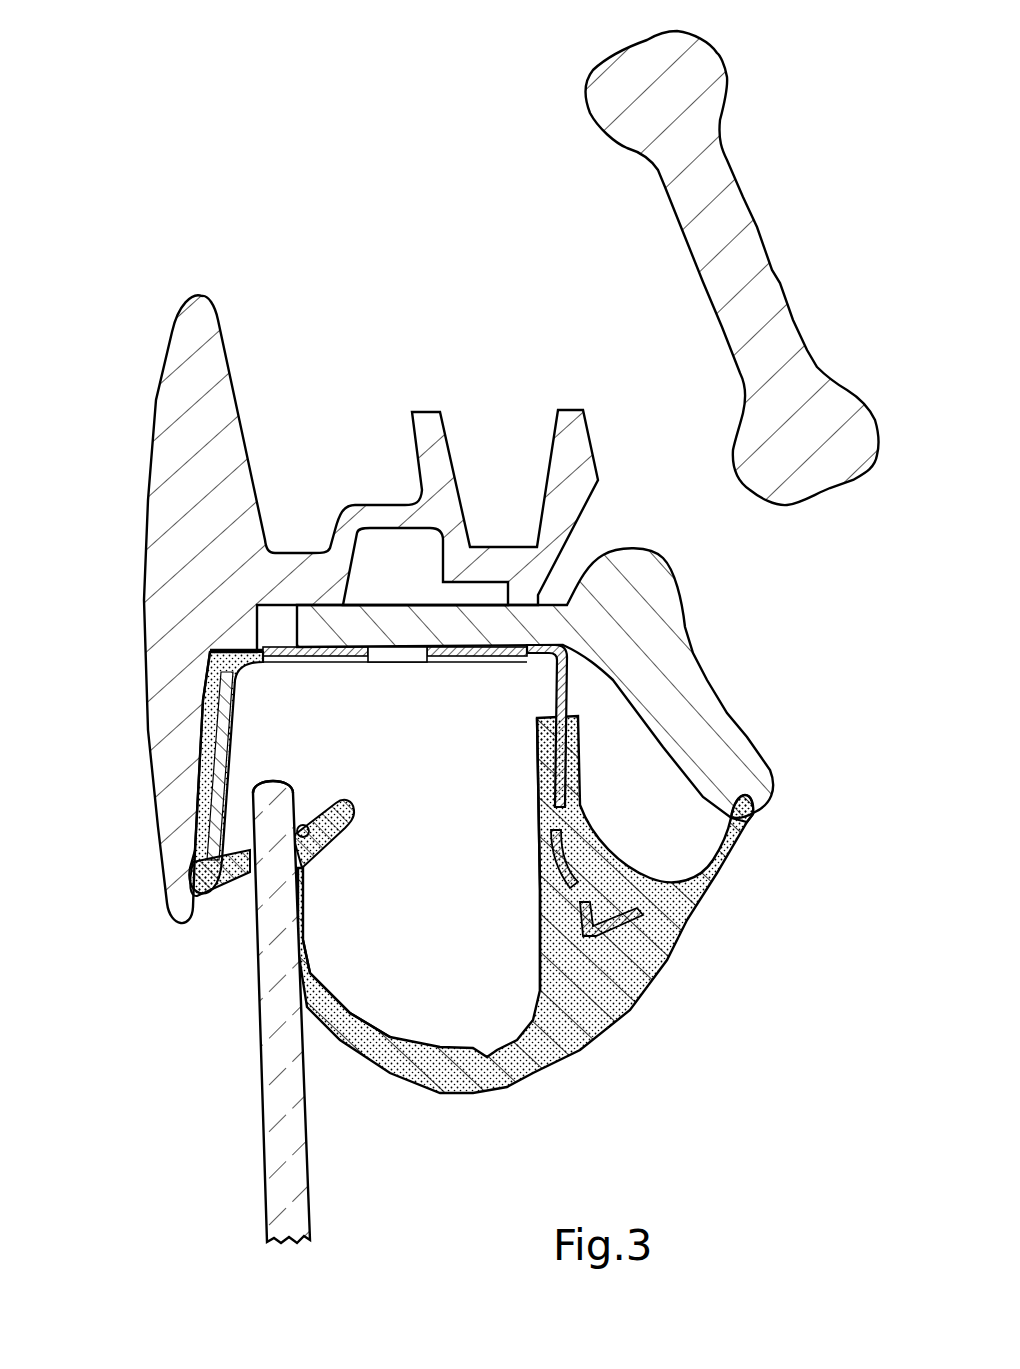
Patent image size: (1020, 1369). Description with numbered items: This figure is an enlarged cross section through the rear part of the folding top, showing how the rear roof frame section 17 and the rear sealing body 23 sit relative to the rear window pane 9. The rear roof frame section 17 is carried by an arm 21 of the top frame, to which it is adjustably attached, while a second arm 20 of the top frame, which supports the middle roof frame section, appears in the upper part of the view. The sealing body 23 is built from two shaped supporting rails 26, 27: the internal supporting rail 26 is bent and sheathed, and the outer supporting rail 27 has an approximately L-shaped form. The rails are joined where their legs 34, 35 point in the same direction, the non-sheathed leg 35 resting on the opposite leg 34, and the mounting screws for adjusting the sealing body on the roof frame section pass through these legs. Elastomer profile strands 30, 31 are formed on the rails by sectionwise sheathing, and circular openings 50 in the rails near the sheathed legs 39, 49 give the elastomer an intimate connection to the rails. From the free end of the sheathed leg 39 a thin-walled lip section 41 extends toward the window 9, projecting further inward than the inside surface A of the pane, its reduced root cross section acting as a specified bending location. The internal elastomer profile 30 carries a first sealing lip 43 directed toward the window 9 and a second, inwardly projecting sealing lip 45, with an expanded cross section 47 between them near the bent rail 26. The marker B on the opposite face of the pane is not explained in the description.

The rear window pane 9 is at (283, 1167).
The rear roof frame section 17 is at (320, 609).
The arm 20 is at (738, 222).
The arm 21 is at (683, 662).
The sealing body 23 is at (525, 926).
The internal supporting rail 26 is at (388, 726).
The supporting rail 27 is at (395, 688).
The elastomer profile strand 30 is at (492, 854).
The elastomer profile strand 31 is at (283, 790).
The leg 34 is at (364, 645).
The non-sheathed leg 35 is at (465, 663).
The sheathed leg 39 is at (197, 843).
The lip section 41 is at (237, 887).
The first sealing lip 43 is at (337, 997).
The second sealing lip 45 is at (722, 845).
The expanded cross section 47 is at (630, 955).
The sheathed leg 49 is at (540, 855).
The circular openings 50 is at (197, 800).
The inside surface A is at (353, 1190).
The direction B is at (190, 1107).